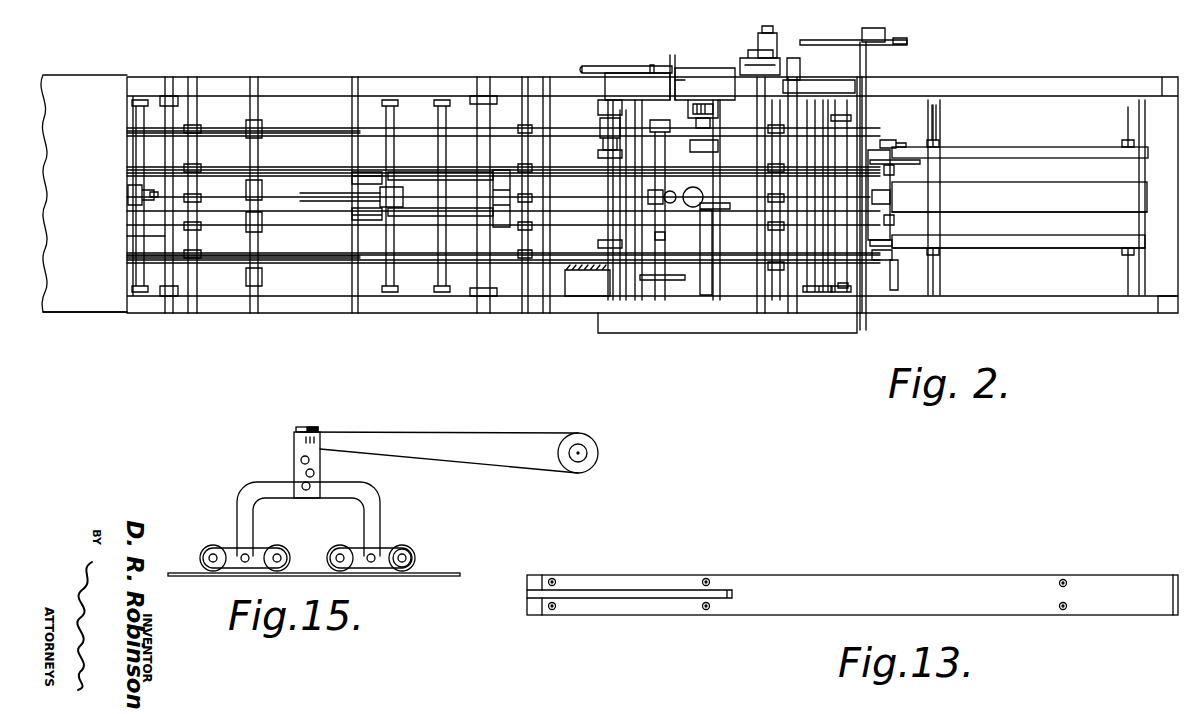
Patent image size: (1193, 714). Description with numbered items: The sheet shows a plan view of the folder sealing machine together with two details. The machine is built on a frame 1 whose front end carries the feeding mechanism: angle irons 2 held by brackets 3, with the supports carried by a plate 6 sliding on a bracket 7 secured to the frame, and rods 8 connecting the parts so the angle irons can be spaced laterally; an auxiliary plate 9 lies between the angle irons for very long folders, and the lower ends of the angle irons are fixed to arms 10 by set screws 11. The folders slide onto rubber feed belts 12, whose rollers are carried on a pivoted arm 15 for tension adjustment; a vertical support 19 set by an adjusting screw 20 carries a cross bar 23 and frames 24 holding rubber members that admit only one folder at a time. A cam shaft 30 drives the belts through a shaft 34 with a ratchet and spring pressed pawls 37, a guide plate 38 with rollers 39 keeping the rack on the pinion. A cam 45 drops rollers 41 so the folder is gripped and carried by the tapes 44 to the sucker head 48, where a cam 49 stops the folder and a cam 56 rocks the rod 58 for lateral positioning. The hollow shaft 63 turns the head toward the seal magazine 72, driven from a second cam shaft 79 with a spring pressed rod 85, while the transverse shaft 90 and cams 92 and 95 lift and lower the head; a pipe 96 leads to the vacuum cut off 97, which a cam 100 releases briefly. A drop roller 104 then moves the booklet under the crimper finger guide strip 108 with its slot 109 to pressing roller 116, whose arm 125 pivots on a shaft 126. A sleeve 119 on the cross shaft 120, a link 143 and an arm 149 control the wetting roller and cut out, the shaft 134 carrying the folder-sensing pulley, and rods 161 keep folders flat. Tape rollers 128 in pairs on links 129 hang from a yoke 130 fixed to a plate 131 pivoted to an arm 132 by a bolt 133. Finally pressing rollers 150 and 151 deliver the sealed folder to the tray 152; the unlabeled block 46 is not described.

In FIG. 2, the frame 1 is at (313, 84).
In FIG. 2, the angle irons 2 is at (1065, 147).
In FIG. 2, the brackets 3 is at (940, 145).
In FIG. 2, the plate 6 is at (932, 115).
In FIG. 2, the bracket 7 is at (1165, 317).
In FIG. 2, the rods 8 is at (938, 226).
In FIG. 2, the auxiliary plate 9 is at (1132, 197).
In FIG. 2, the arms 10 is at (867, 142).
In FIG. 2, the set screws 11 is at (898, 255).
In FIG. 2, the rubber feed belts 12 is at (892, 174).
In FIG. 2, the arm 15 is at (870, 198).
In FIG. 2, the vertical support 19 is at (895, 200).
In FIG. 2, the adjusting screw 20 is at (892, 208).
In FIG. 2, the cross bar 23 is at (895, 252).
In FIG. 2, the frames 24 is at (887, 140).
In FIG. 2, the cam shaft 30 is at (760, 44).
In FIG. 2, the shaft 34 is at (872, 70).
In FIG. 2, the spring pressed pawls 37 is at (887, 2).
In FIG. 2, the guide plate 38 is at (847, 42).
In FIG. 2, the rollers 39 is at (890, 43).
In FIG. 2, the rollers 41 is at (843, 287).
In FIG. 2, the folder conveying tapes 44 is at (297, 180).
In FIG. 15, the folder conveying tapes 44 is at (452, 573).
In FIG. 2, the cam 45 is at (767, 38).
In FIG. 2, the block 46 is at (802, 70).
In FIG. 2, the sucker head 48 is at (662, 255).
In FIG. 2, the cam 49 is at (757, 51).
In FIG. 2, the cam 56 is at (727, 76).
In FIG. 2, the rod 58 is at (717, 242).
In FIG. 2, the hollow shaft 63 is at (670, 278).
In FIG. 2, the seal carrying magazine 72 is at (663, 175).
In FIG. 2, the second cam shaft 79 is at (630, 160).
In FIG. 2, the spring pressed rod 85 is at (587, 283).
In FIG. 2, the transverse shaft 90 is at (618, 240).
In FIG. 2, the cam 92 is at (615, 128).
In FIG. 2, the cam 95 is at (615, 115).
In FIG. 2, the pipe 96 is at (650, 77).
In FIG. 2, the vacuum cut off 97 is at (671, 72).
In FIG. 2, the cam 100 is at (637, 80).
In FIG. 2, the drop roller 104 is at (717, 215).
In FIG. 13, the crimper finger guide strip 108 is at (875, 582).
In FIG. 13, the slot 109 is at (676, 591).
In FIG. 2, the pressing roller 116 is at (352, 192).
In FIG. 2, the sleeve 119 is at (725, 144).
In FIG. 2, the cross shaft 120 is at (350, 218).
In FIG. 2, the arm 125 is at (437, 207).
In FIG. 15, the shaft 126 is at (587, 453).
In FIG. 15, the tape rollers 128 is at (205, 551).
In FIG. 2, the links 129 is at (382, 160).
In FIG. 15, the links 129 is at (392, 550).
In FIG. 15, the yoke 130 is at (363, 517).
In FIG. 15, the plate 131 is at (293, 468).
In FIG. 2, the arm 132 is at (427, 178).
In FIG. 15, the arm 132 is at (462, 438).
In FIG. 15, the bolt 133 is at (313, 431).
In FIG. 2, the shaft 134 is at (842, 283).
In FIG. 2, the link 143 is at (704, 101).
In FIG. 2, the arm 149 is at (637, 86).
In FIG. 2, the pressing roller 150 is at (130, 195).
In FIG. 2, the pressing roller 151 is at (134, 241).
In FIG. 2, the tray 152 is at (108, 298).
In FIG. 2, the rods 161 is at (218, 160).